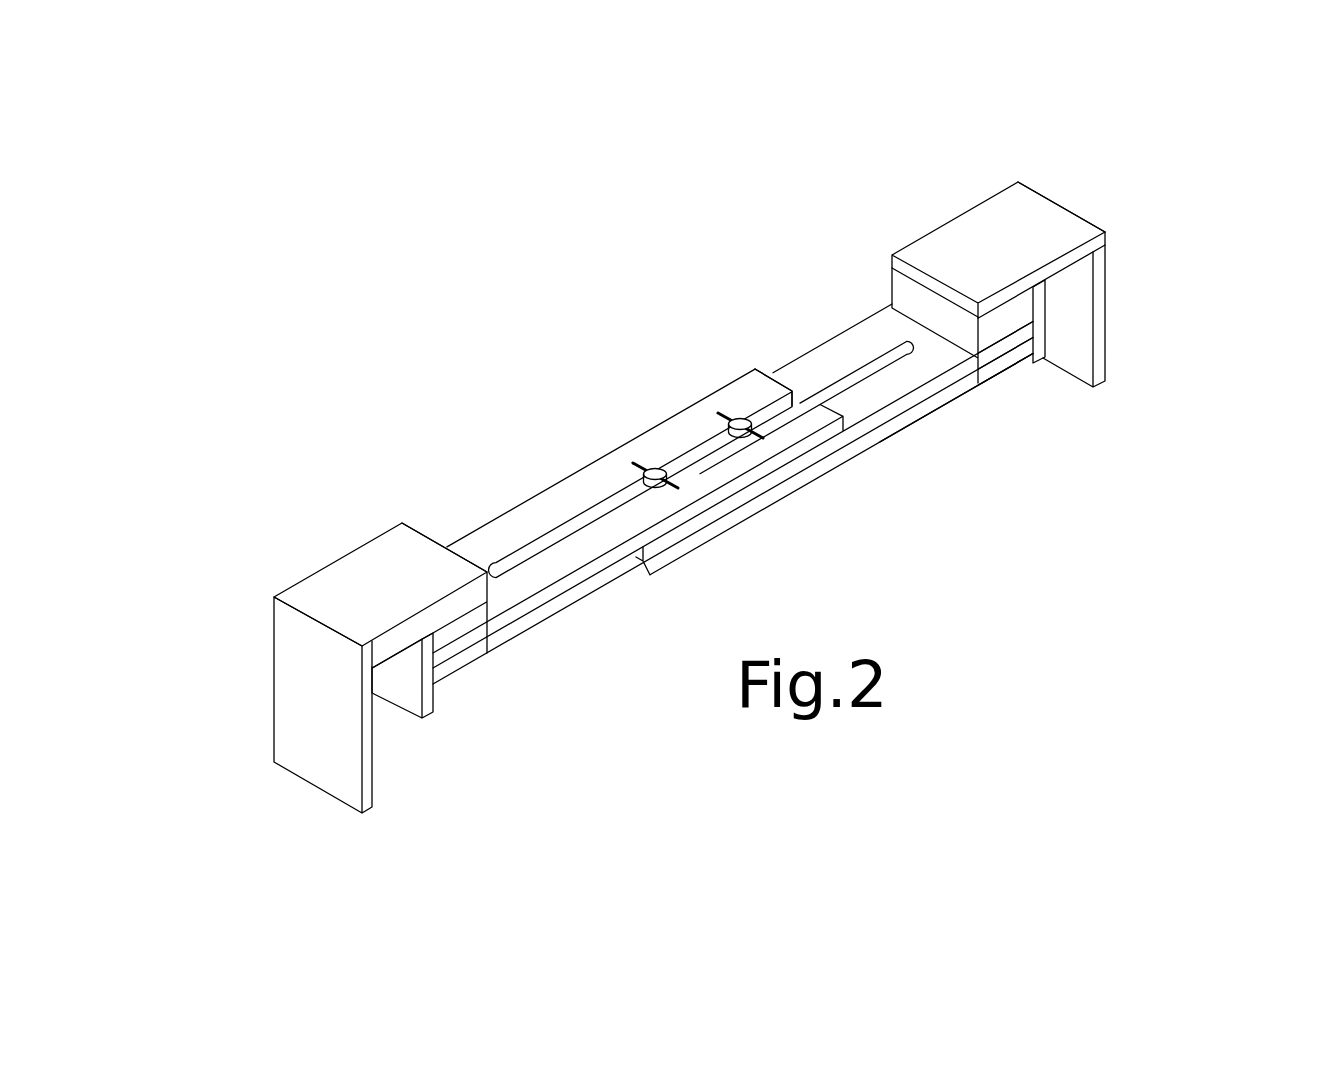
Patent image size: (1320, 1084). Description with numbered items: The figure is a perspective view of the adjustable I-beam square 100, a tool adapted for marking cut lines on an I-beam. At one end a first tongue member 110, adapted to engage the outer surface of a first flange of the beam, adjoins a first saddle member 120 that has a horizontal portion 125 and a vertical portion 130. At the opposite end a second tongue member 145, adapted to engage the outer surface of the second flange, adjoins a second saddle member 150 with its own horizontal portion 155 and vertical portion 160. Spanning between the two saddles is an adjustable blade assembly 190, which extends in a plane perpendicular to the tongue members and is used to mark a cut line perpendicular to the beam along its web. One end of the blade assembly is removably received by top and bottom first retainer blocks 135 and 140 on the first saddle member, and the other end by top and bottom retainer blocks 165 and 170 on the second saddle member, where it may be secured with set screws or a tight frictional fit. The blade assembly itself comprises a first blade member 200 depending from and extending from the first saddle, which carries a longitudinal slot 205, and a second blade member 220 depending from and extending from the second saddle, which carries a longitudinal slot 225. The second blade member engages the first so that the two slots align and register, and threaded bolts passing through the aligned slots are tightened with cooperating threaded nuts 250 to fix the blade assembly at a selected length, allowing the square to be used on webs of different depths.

The adjustable I-beam square 100 is at (553, 300).
The first tongue member 110 is at (308, 697).
The first saddle member 120 is at (300, 590).
The horizontal portion 125 is at (385, 572).
The vertical portion 130 is at (407, 690).
The top first retainer block 135 is at (470, 623).
The bottom first retainer block 140 is at (465, 668).
The second tongue member 145 is at (1097, 312).
The second saddle member 150 is at (977, 242).
The horizontal portion 155 is at (1030, 230).
The vertical portion 160 is at (1040, 365).
The top retainer block 165 is at (900, 297).
The bottom retainer block 170 is at (990, 383).
The adjustable blade assembly 190 is at (590, 462).
The first blade member 200 is at (493, 540).
The longitudinal slot 205 is at (775, 380).
The second blade member 220 is at (922, 405).
The longitudinal slot 225 is at (853, 383).
The threaded nuts 250 is at (735, 418).